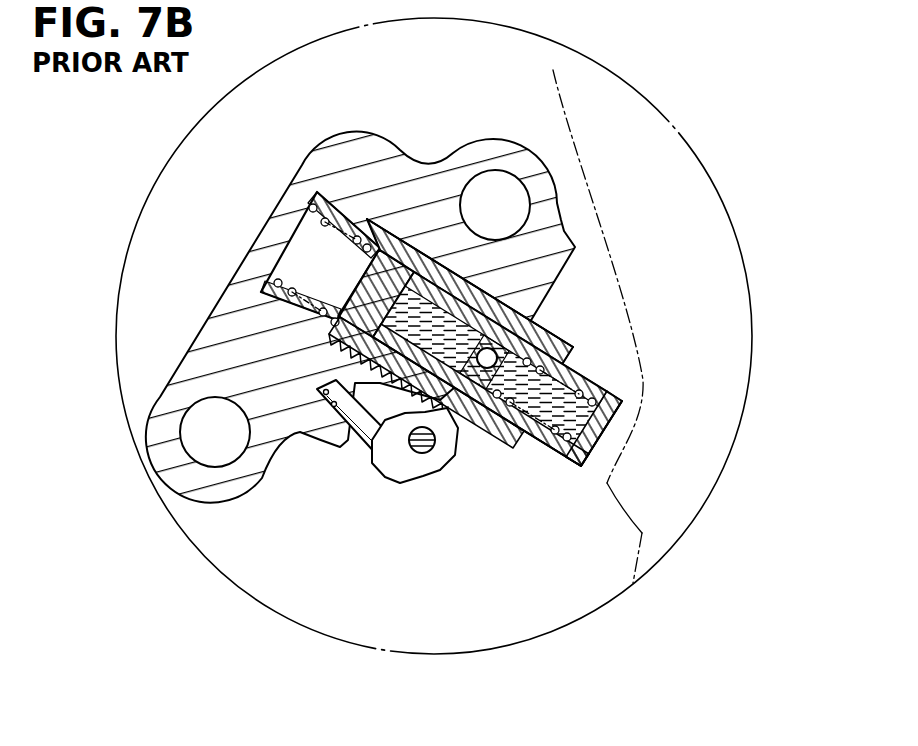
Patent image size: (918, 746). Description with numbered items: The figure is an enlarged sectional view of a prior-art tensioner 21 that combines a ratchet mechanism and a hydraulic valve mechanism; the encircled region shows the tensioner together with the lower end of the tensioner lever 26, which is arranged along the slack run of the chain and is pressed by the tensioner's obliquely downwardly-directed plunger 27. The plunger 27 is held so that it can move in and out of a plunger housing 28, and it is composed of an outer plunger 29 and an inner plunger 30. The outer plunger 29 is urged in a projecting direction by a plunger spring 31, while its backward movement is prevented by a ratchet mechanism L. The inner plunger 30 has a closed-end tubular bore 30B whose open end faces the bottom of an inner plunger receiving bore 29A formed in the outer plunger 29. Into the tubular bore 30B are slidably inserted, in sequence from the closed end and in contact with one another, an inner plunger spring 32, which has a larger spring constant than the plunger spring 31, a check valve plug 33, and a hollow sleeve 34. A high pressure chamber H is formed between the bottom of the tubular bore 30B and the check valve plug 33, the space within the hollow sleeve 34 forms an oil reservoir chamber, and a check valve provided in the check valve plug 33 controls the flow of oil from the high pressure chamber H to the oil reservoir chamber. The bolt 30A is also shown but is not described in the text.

The tensioner 21 is at (455, 332).
The tensioner lever 26 is at (637, 230).
The plunger 27 is at (579, 486).
The plunger housing 28 is at (220, 340).
The outer plunger 29 is at (516, 438).
The inner plunger receiving bore 29A is at (470, 278).
The inner plunger 30 is at (539, 414).
The bolt 30A is at (380, 405).
The tubular bore 30B is at (592, 362).
The plunger spring 31 is at (310, 225).
The inner plunger spring 32 is at (590, 420).
The check valve plug 33 is at (460, 420).
The hollow sleeve 34 is at (430, 268).
The high pressure chamber H is at (600, 440).
The ratchet mechanism L is at (455, 490).